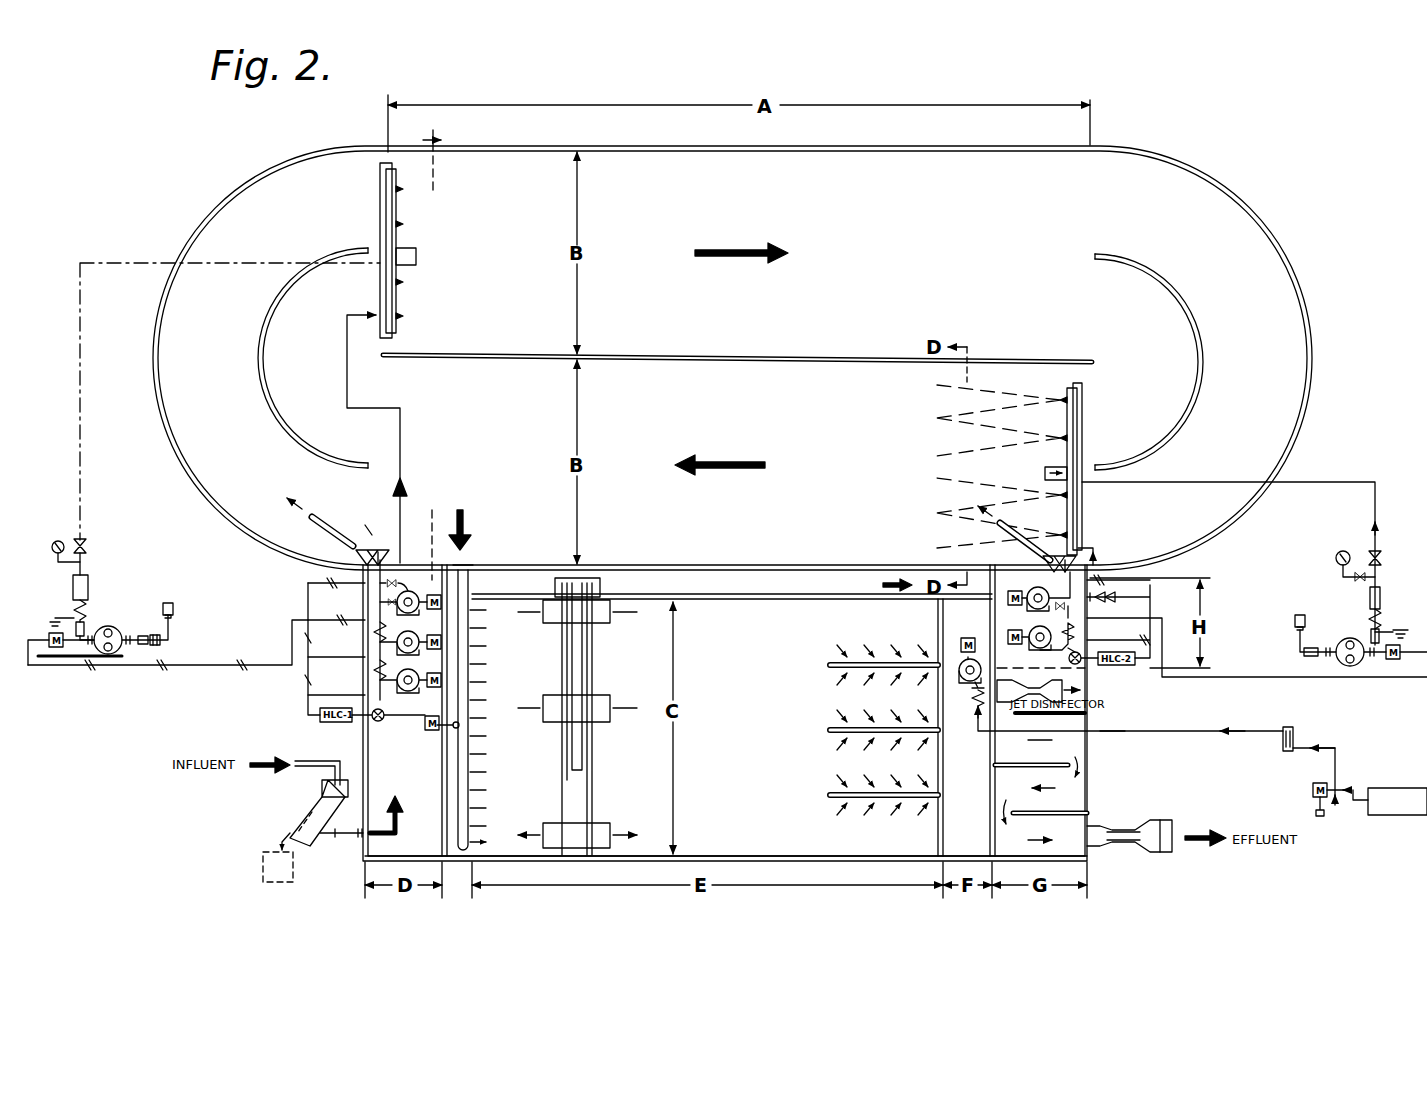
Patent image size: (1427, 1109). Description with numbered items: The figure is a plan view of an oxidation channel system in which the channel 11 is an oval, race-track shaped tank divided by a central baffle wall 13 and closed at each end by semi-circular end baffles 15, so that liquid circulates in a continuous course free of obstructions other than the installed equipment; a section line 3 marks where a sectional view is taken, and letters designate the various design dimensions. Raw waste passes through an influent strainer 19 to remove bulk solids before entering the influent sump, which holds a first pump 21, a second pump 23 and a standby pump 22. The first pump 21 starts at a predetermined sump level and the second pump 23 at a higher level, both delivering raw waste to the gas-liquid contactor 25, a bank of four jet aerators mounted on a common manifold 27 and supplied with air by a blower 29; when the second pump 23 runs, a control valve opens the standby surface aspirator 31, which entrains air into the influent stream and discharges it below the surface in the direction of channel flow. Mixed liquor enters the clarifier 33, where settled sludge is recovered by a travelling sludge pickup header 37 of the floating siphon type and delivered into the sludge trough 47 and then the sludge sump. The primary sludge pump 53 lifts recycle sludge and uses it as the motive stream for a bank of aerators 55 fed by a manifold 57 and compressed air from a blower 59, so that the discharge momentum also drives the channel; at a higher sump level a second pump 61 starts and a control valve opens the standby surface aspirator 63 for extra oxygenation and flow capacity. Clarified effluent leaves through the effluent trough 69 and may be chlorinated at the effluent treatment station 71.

The section line of FIG. 3 is at (432, 358).
The channel 11 is at (293, 150).
The baffle wall 13 is at (735, 354).
The semi-circular end baffles 15 is at (262, 352).
The influent strainer 19 is at (320, 790).
The first pump 21 is at (378, 680).
The standby pump 22 is at (378, 642).
The second pump 23 is at (372, 601).
The gas-liquid contactor 25 is at (404, 250).
The manifold 27 is at (112, 628).
The blower 29 is at (386, 200).
The standby surface aspirator 31 is at (356, 530).
The clarifier 33 is at (750, 734).
The travelling sludge pickup header 37 is at (556, 658).
The sludge trough 47 is at (702, 593).
The primary sludge pump 53 is at (1026, 588).
The bank of aerators 55 is at (1044, 458).
The manifold 57 is at (1078, 410).
The blower 59 is at (1352, 640).
The second pump 61 is at (1052, 630).
The standby surface aspirator 63 is at (1023, 548).
The effluent trough 69 is at (880, 660).
The effluent treatment station 71 is at (1345, 778).